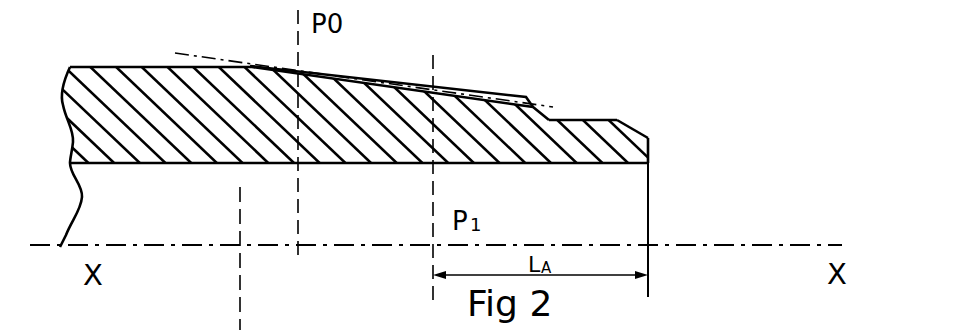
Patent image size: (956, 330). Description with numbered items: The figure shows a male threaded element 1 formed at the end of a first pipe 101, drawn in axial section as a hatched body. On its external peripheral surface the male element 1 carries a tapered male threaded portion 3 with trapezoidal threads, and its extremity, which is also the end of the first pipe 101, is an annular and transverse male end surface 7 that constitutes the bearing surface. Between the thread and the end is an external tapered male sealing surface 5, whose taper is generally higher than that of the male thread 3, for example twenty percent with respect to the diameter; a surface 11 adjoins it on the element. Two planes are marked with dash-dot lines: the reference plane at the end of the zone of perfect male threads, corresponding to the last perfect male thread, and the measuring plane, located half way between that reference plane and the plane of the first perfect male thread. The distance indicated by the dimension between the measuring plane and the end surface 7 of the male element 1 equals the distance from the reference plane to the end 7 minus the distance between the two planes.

The male element 1 is at (402, 66).
The tapered male threaded portion 3 is at (458, 90).
The male sealing surface 5 is at (623, 119).
The male end surface 7 is at (648, 146).
The cylindrical surface 11 is at (577, 120).
The first pipe 101 is at (270, 130).